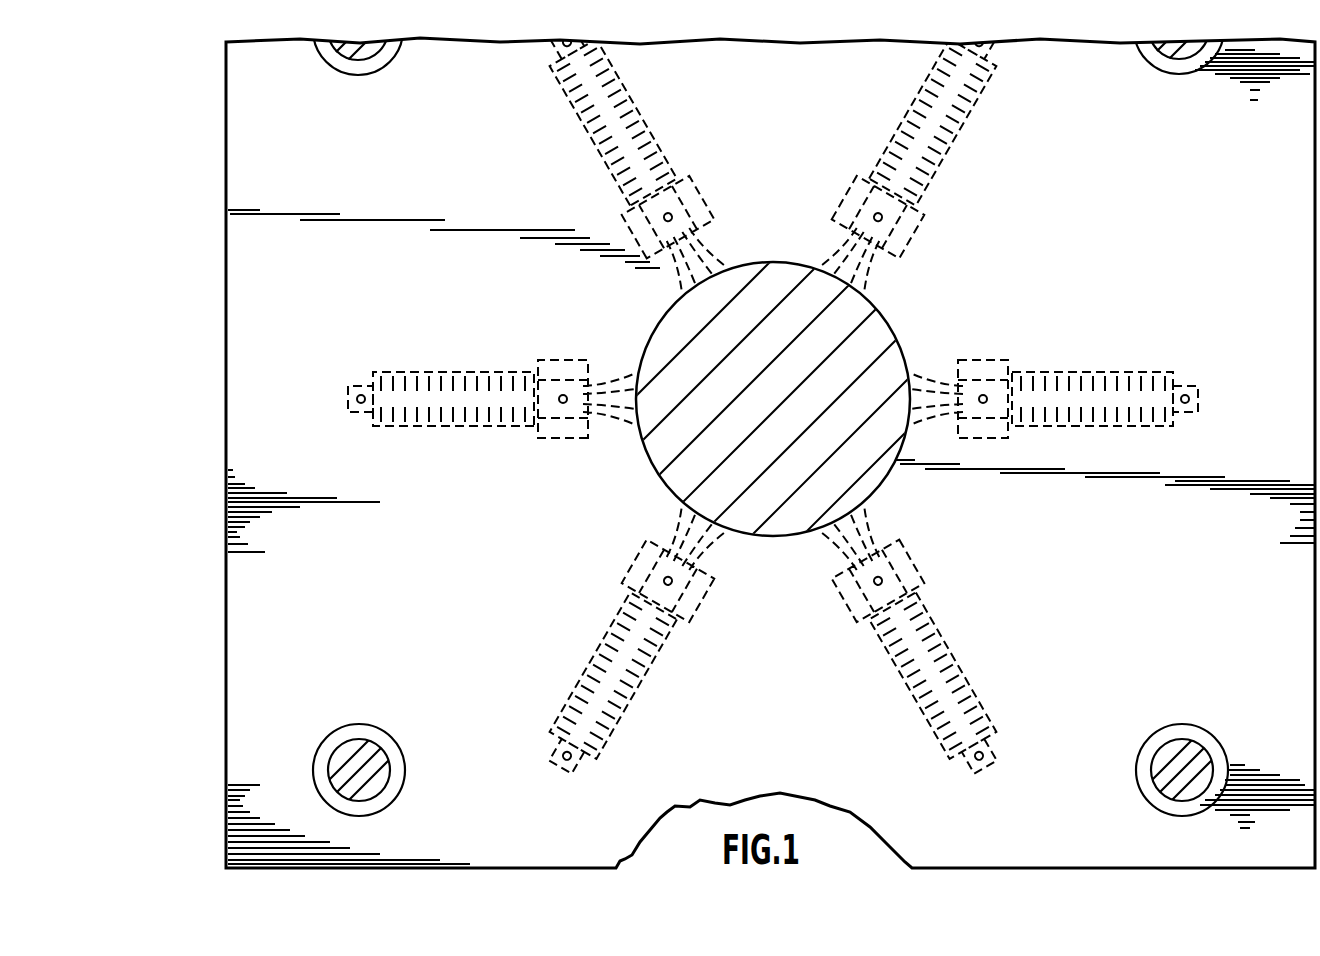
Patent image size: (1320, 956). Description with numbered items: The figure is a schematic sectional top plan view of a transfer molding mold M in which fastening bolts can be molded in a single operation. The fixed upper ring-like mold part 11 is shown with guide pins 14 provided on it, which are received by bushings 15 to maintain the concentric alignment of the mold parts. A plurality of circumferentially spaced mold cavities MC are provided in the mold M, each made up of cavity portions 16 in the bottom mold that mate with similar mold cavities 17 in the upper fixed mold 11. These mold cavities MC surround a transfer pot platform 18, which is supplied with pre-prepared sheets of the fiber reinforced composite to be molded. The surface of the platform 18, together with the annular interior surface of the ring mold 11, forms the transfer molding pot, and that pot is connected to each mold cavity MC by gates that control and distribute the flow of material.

The mold M is at (216, 623).
The upper ring-like mold part 11 is at (786, 120).
The guide pins 14 is at (362, 48).
The bushings 15 is at (382, 62).
The cavity portions 16 is at (773, 399).
The mold cavities 17 is at (773, 399).
The transfer pot platform 18 is at (739, 287).
The mold cavities MC is at (962, 147).